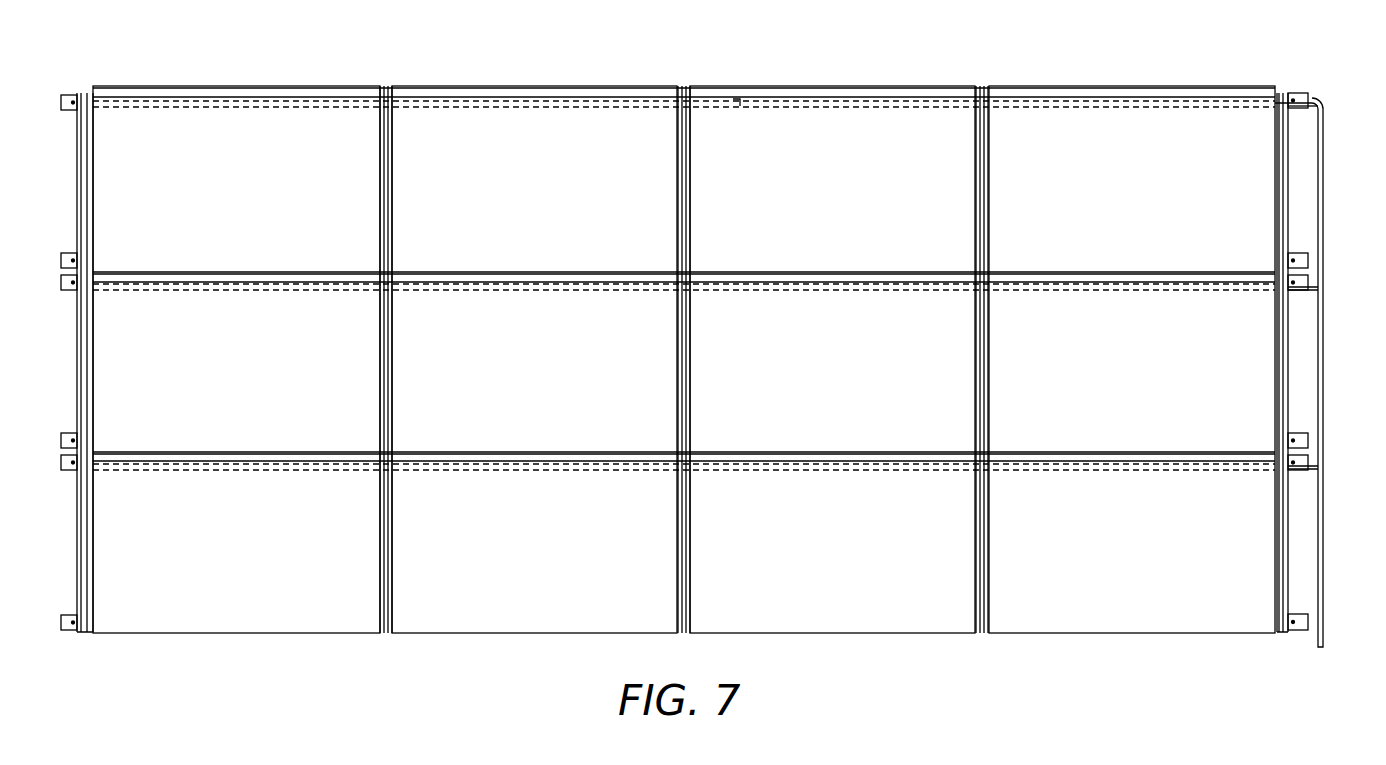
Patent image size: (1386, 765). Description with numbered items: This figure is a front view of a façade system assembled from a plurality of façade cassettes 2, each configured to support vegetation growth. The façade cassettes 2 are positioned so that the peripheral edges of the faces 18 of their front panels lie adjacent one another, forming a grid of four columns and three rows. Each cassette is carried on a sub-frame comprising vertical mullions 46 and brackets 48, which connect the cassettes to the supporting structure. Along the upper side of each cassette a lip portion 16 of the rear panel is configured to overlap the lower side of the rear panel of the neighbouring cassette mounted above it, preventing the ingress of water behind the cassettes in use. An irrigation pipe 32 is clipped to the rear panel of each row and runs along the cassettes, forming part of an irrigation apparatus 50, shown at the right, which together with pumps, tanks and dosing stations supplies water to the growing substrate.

The façade cassette 2 is at (235, 138).
The face 18 is at (533, 138).
The lip portion 16 is at (1130, 93).
The pipe 32 is at (736, 103).
The mullions 46 is at (77, 530).
The brackets 48 is at (75, 93).
The irrigation apparatus 50 is at (1324, 344).